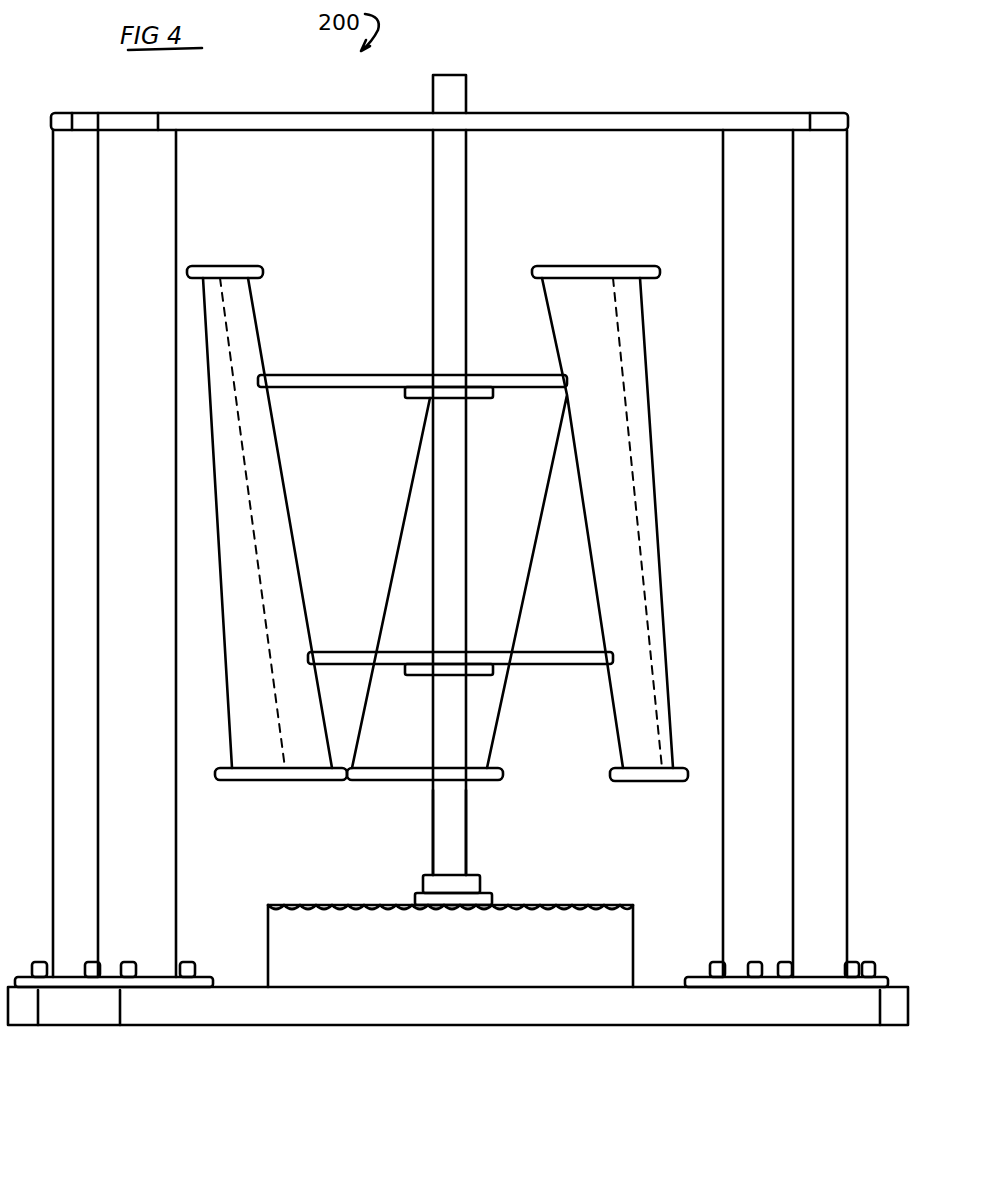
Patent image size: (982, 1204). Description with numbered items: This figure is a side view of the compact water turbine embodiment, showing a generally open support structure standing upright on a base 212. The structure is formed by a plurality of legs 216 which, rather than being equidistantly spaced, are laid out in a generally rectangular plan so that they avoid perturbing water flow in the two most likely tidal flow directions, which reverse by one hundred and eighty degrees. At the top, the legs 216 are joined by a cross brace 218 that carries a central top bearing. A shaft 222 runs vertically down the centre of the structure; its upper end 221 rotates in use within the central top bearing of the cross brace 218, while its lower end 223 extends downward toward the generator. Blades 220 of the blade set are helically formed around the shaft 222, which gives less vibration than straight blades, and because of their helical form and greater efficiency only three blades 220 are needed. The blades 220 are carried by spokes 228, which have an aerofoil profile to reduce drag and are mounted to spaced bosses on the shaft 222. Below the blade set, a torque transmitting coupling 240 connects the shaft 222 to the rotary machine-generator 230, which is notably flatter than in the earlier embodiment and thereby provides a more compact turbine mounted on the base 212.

The base 212 is at (260, 1005).
The legs 216 is at (763, 572).
The cross brace 218 is at (612, 118).
The blades 220 is at (612, 368).
The upper end 221 is at (454, 104).
The shaft 222 is at (458, 208).
The lower end 223 is at (452, 858).
The spokes 228 is at (358, 380).
The rotary machine-generator 230 is at (555, 981).
The torque transmitting coupling 240 is at (468, 890).